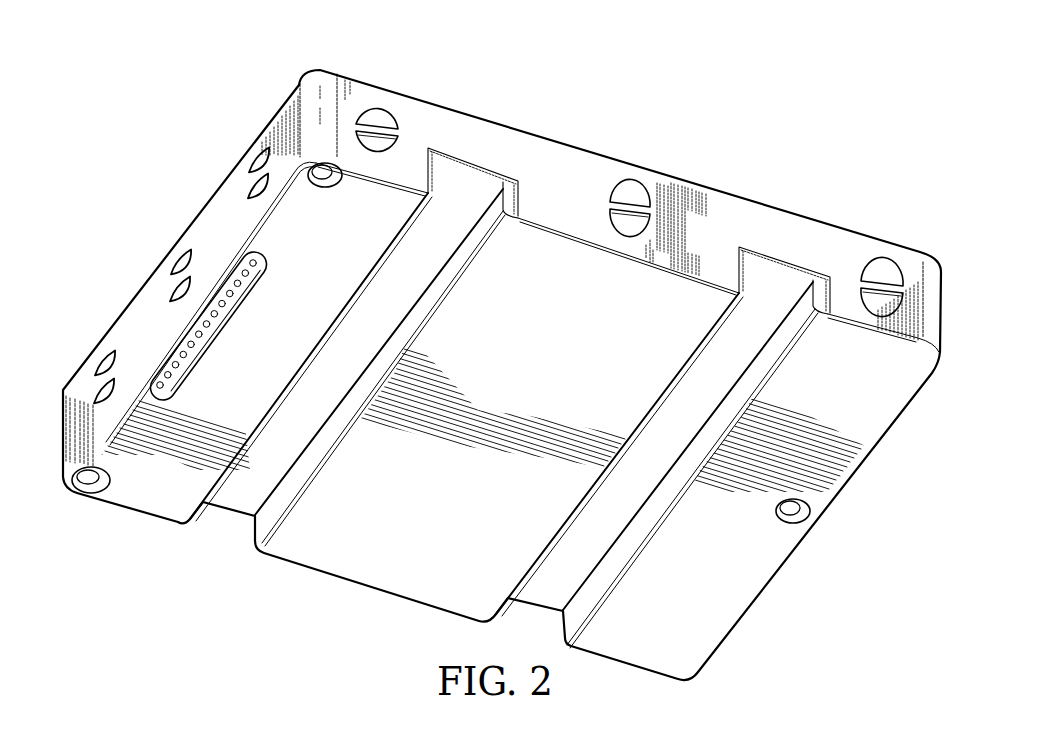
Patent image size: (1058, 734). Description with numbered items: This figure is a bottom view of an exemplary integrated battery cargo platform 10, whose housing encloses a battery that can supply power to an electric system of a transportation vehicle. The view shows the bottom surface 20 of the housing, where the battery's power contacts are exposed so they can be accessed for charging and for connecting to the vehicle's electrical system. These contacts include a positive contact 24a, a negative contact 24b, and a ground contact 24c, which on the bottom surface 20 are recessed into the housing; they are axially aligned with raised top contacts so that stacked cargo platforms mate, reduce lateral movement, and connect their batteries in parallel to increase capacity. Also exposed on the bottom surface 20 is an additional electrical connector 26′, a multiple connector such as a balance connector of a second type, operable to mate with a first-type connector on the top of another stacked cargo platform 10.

The cargo platform 10 is at (700, 122).
The bottom surface 20 is at (382, 586).
The positive contact 24a is at (327, 180).
The negative contact 24b is at (90, 484).
The ground contact 24c is at (793, 515).
The connector 26′ is at (207, 330).